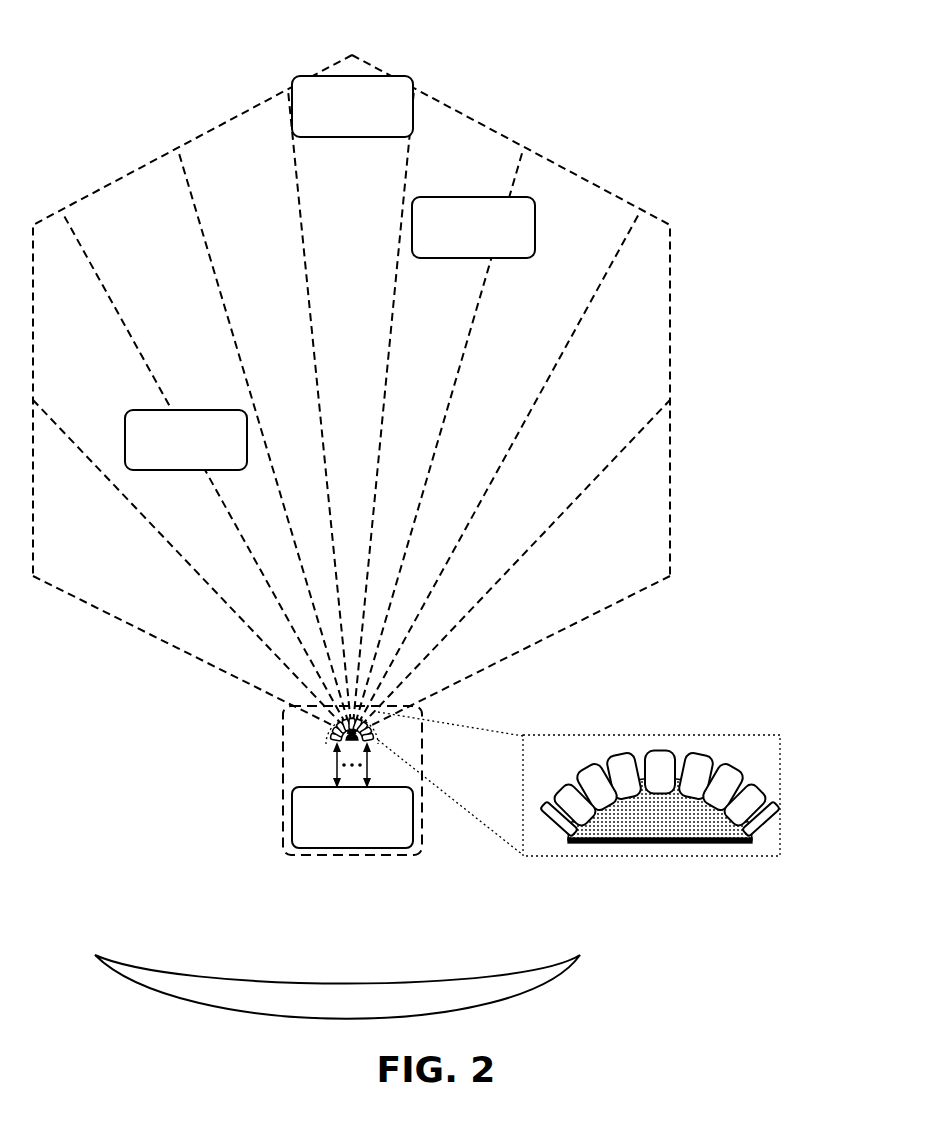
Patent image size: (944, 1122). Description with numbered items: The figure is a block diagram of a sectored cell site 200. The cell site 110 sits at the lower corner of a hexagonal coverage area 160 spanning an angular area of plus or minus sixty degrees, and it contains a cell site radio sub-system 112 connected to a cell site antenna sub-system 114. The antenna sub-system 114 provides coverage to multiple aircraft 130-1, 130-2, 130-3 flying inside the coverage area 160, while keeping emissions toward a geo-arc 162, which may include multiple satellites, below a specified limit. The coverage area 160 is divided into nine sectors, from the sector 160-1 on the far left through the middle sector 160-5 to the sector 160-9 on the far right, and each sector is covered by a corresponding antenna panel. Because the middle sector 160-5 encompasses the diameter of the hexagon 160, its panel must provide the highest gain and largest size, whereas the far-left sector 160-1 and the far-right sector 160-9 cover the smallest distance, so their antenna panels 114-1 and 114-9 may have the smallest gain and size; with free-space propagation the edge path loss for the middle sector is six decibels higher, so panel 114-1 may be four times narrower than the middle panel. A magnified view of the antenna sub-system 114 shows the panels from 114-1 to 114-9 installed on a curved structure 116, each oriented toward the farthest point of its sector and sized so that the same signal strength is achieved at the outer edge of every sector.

The sectored cell site 200 is at (106, 79).
The cell site 110 is at (283, 768).
The cell site radio sub-system 112 is at (352, 817).
The cell site antenna sub-system 114 is at (660, 840).
The antenna panel 114-1 is at (555, 845).
The antenna panel 114-9 is at (763, 845).
The curved structure 116 is at (655, 843).
The aircraft 130-1 is at (352, 106).
The aircraft 130-2 is at (186, 440).
The aircraft 130-3 is at (473, 227).
The coverage area 160 is at (455, 688).
The sector 160-1 is at (163, 598).
The sector 160-5 is at (365, 183).
The sector 160-9 is at (585, 575).
The geo-arc 162 is at (555, 985).